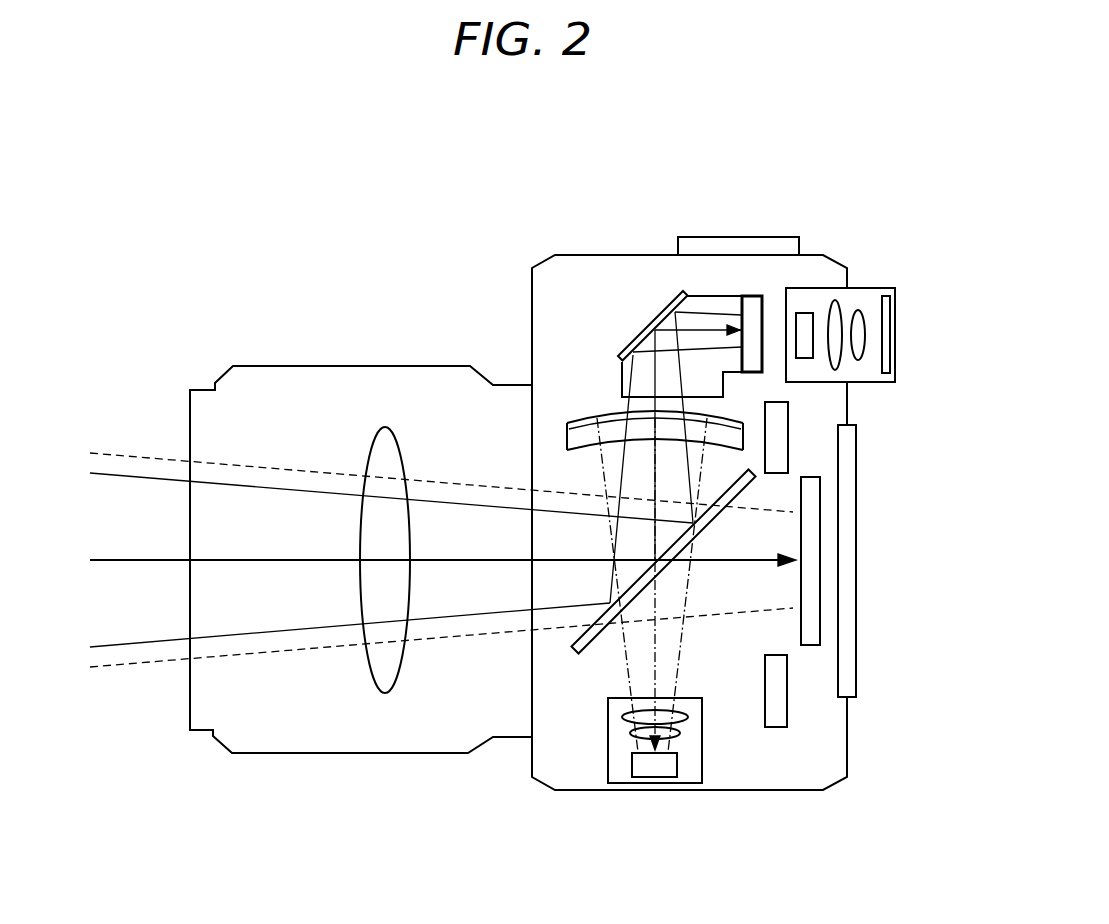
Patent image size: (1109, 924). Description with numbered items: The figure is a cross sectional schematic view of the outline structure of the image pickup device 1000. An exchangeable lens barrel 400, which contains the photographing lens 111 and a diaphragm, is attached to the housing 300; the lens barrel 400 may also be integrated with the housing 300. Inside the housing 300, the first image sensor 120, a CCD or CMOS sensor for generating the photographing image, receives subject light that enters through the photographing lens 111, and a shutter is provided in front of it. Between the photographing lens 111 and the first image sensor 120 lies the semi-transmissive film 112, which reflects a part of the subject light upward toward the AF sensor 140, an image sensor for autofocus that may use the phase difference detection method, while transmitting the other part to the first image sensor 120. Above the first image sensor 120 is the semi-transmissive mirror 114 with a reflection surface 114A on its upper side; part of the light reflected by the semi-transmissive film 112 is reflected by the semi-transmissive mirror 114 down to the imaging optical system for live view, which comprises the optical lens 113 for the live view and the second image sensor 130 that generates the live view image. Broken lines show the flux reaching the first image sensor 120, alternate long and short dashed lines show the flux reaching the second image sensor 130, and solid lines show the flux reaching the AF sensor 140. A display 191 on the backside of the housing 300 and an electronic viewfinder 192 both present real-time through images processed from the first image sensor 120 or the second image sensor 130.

The image pickup device 1000 is at (766, 200).
The housing 300 is at (832, 258).
The lens barrel 400 is at (317, 753).
The photographing lens 111 is at (380, 428).
The semi-transmissive film 112 is at (720, 503).
The optical lens for the live view 113 is at (620, 717).
The semi-transmissive mirror 114 is at (643, 303).
The reflection surface 114A is at (605, 412).
The first image sensor 120 is at (814, 647).
The second image sensor 130 is at (660, 777).
The AF sensor 140 is at (655, 322).
The display 191 is at (857, 500).
The electronic viewfinder 192 is at (897, 332).